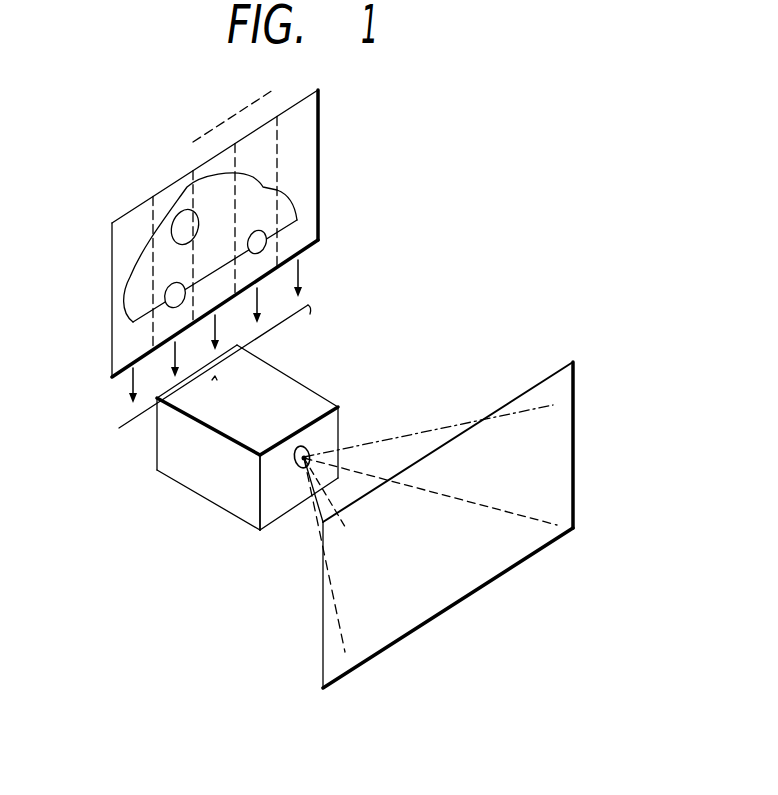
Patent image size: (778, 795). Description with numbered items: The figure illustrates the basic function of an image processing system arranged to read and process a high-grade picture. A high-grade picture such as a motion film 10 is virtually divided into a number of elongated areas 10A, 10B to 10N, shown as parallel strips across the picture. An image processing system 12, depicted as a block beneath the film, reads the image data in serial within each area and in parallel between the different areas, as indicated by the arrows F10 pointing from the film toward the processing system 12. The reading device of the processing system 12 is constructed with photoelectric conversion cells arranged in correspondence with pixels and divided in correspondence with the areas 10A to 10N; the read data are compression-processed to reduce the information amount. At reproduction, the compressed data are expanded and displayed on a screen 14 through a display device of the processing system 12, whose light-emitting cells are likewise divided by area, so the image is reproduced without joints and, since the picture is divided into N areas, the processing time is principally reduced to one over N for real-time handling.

The motion film 10 is at (231, 221).
The elongated area 10A is at (118, 237).
The elongated area 10B is at (173, 188).
The elongated area 10N is at (297, 122).
The arrows F10 is at (301, 281).
The image processing system 12 is at (315, 407).
The screen 14 is at (545, 392).